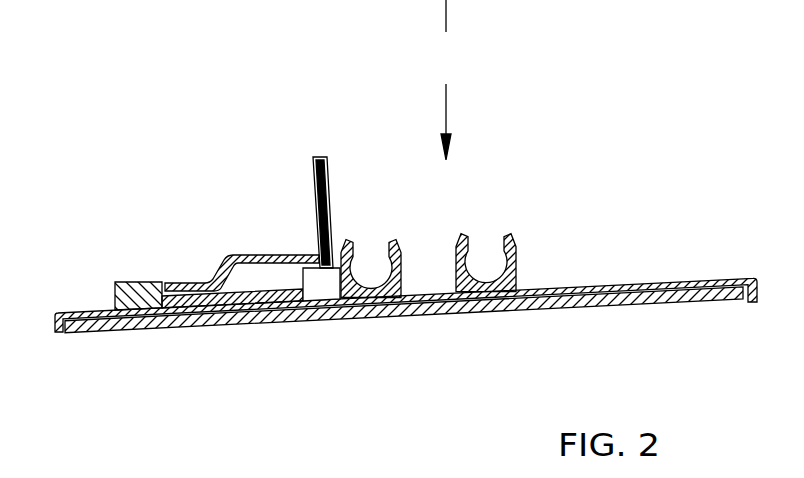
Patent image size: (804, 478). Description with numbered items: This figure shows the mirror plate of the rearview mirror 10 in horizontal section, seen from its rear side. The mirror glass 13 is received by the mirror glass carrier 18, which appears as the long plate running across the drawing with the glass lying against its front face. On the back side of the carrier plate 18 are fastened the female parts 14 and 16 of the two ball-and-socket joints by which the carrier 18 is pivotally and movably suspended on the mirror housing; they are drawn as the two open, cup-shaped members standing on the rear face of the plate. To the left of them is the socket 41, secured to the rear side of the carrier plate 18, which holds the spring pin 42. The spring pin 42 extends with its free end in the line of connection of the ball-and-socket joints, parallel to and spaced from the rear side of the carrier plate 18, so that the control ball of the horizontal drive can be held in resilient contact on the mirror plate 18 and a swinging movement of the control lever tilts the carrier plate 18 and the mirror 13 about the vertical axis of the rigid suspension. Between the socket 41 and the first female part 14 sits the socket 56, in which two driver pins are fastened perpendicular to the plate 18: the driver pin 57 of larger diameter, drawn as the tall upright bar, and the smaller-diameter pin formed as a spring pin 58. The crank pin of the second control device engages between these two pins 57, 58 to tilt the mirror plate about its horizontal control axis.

The rearview mirror 10 is at (447, 80).
The mirror glass 13 is at (396, 316).
The female part of ball-and-socket joint 14 is at (380, 240).
The female part of ball-and-socket joint 16 is at (481, 239).
The mirror glass carrier 18 is at (577, 287).
The socket 41 is at (150, 282).
The spring pin 42 is at (258, 255).
The socket 56 is at (320, 290).
The driver pin 57 is at (320, 157).
The spring pin 58 is at (318, 193).